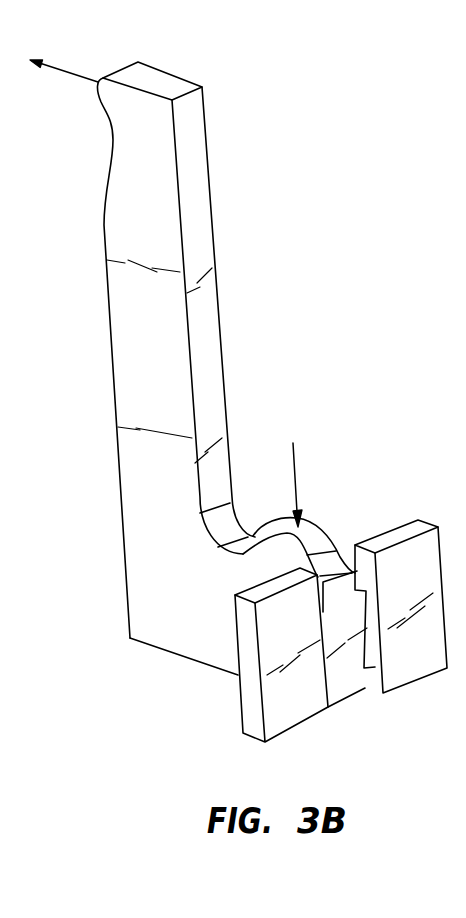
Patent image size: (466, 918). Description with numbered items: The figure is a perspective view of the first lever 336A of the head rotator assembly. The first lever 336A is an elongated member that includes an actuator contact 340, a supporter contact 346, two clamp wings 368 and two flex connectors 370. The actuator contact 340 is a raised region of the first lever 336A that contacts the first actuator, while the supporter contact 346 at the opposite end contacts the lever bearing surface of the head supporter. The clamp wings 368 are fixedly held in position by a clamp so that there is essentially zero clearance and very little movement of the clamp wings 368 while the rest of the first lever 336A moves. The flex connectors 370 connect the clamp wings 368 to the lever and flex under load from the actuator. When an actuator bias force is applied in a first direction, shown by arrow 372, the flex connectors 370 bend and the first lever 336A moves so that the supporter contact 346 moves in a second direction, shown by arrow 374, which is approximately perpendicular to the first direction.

The first lever 336A is at (202, 318).
The supporter contact 346 is at (147, 90).
The actuator contact 340 is at (255, 552).
The flex connectors 370 is at (330, 625).
The clamp wings 368 is at (415, 628).
The arrow representing the first direction 372 is at (297, 483).
The arrow representing the second direction 374 is at (65, 69).